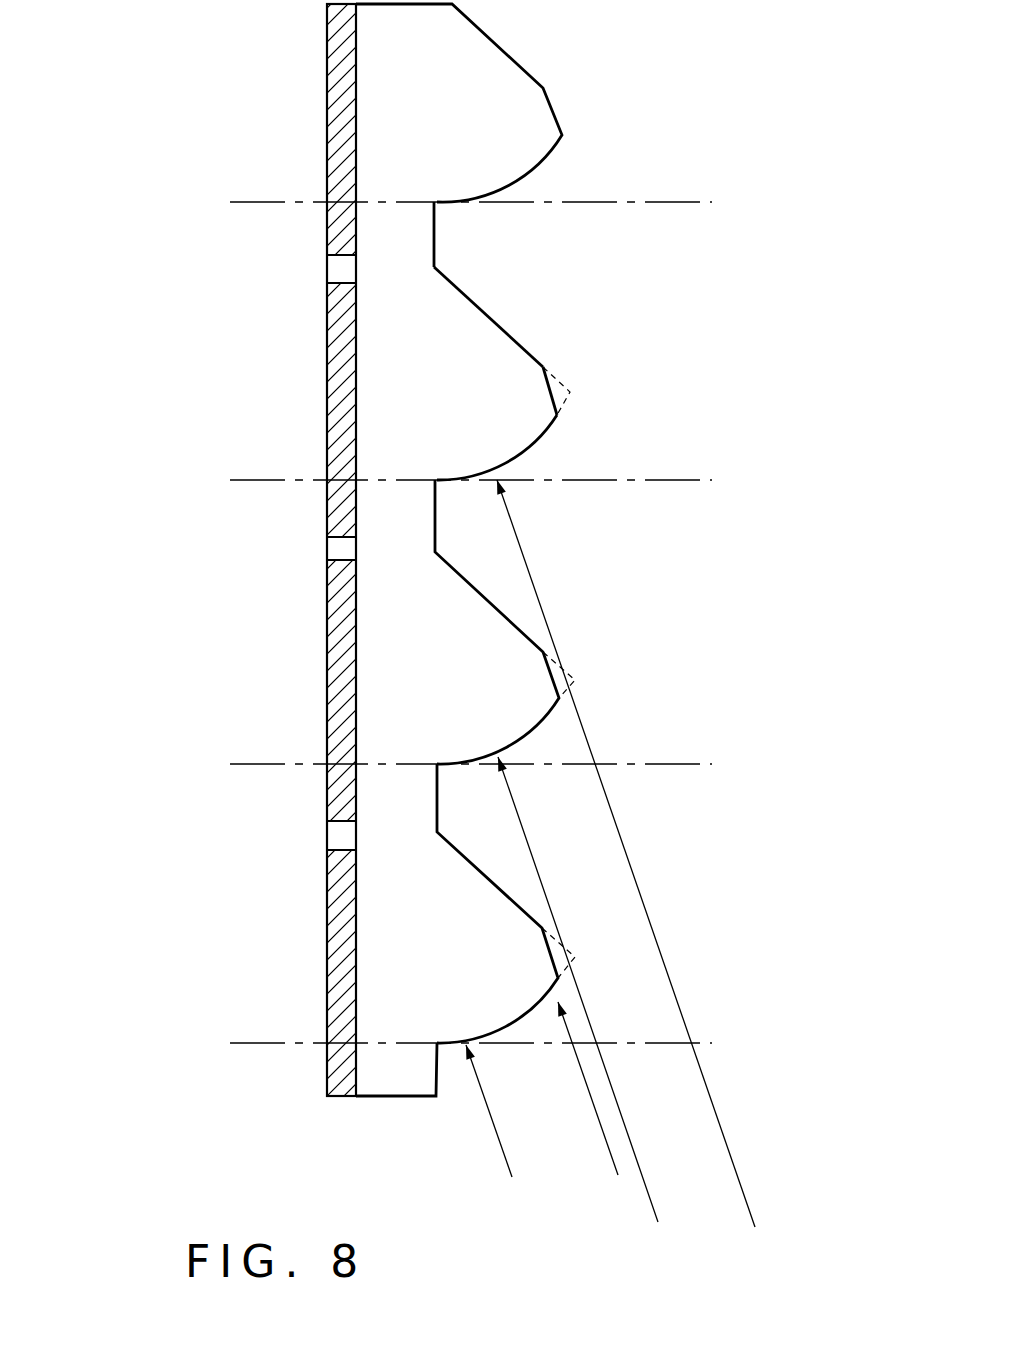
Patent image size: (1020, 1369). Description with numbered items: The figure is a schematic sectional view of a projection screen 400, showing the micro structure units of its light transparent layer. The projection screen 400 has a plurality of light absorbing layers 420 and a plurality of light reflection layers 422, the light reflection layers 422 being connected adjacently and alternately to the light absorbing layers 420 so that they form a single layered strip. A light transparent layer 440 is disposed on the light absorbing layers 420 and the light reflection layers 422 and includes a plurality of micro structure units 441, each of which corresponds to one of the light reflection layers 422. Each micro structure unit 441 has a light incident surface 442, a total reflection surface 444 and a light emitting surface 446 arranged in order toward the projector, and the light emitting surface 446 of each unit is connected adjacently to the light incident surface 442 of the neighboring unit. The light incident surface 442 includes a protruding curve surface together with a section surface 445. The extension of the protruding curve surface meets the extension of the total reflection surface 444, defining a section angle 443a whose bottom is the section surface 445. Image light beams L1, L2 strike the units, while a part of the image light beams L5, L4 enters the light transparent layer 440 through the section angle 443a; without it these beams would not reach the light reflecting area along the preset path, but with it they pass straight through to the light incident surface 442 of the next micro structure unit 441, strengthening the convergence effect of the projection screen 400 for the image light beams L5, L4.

The projection screen 400 is at (198, 52).
The light absorbing layer 420 is at (336, 1097).
The light reflection layer 422 is at (348, 273).
The light transparent layer 440 is at (421, 1078).
The micro structure unit 441 is at (717, 203).
The light incident surface 442 is at (535, 466).
The section angle 443a is at (556, 378).
The total reflection surface 444 is at (498, 318).
The section surface 445 is at (569, 398).
The light emitting surface 446 is at (434, 227).
The image light beam L1 is at (505, 1165).
The image light beam L2 is at (612, 1162).
The image light beam L4 is at (650, 1205).
The image light beam L5 is at (748, 1212).